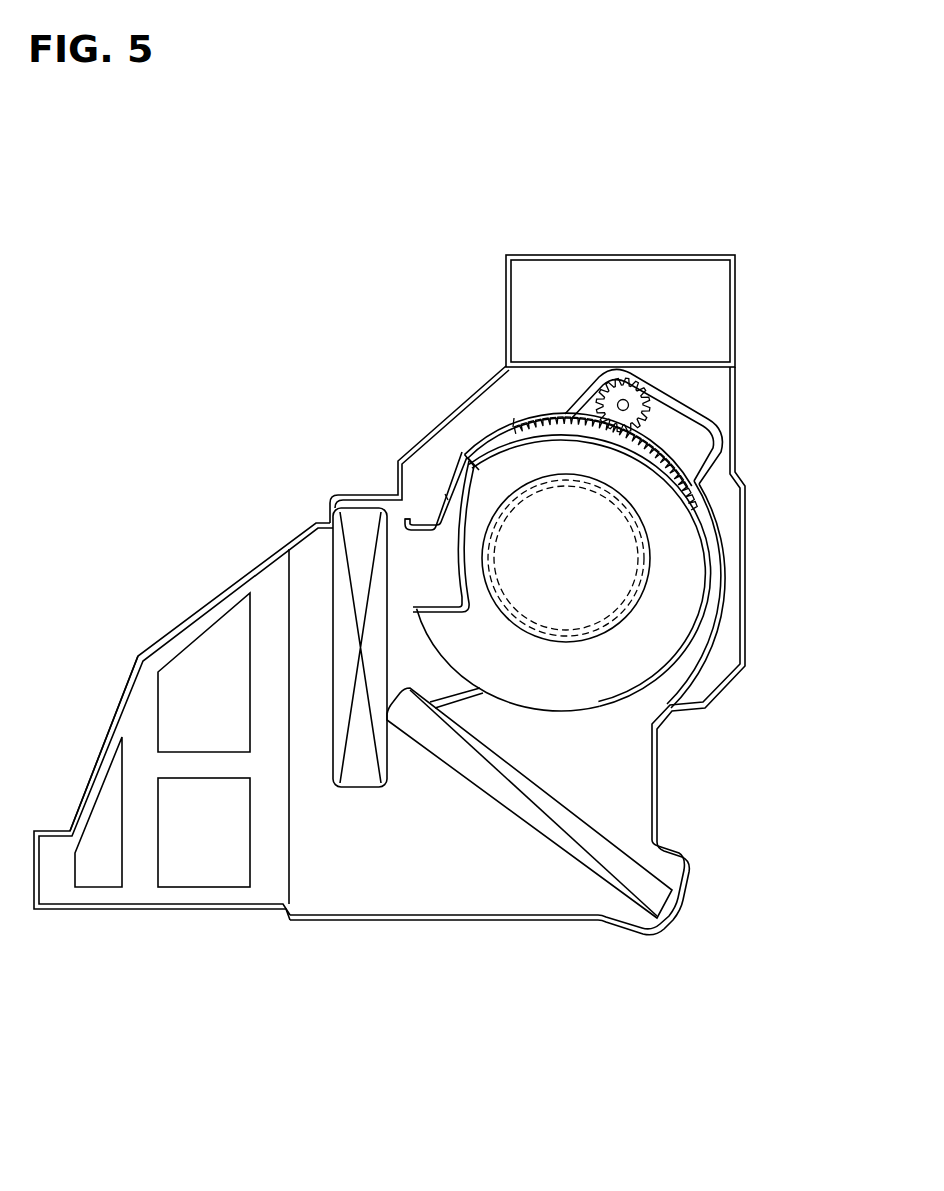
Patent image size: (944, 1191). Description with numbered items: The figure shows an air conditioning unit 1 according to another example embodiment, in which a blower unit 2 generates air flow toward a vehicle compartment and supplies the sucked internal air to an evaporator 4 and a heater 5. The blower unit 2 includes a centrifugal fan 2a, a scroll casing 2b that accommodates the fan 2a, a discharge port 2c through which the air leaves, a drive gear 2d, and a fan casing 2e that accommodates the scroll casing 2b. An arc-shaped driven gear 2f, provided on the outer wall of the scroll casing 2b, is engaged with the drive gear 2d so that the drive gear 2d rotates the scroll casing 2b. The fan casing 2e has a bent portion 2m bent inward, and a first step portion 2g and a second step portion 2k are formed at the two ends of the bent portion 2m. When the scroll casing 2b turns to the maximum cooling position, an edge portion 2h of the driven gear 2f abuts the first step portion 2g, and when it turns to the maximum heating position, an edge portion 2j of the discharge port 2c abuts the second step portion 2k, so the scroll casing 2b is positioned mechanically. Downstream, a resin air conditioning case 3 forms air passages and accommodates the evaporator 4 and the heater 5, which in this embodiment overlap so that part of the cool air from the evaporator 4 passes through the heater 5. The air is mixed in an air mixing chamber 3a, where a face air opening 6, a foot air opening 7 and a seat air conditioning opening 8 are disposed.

The air conditioning unit 1 is at (740, 278).
The blower unit 2 is at (725, 501).
The fan 2a is at (637, 583).
The scroll casing 2b is at (680, 647).
The discharge port 2c is at (517, 683).
The drive gear 2d is at (629, 403).
The fan casing 2e is at (483, 442).
The driven gear 2f is at (721, 504).
The first step portion 2g is at (450, 466).
The edge portion 2h is at (513, 433).
The edge portion 2j is at (425, 630).
The second step portion 2k is at (409, 524).
The bent portion 2m is at (445, 494).
The air conditioning case 3 is at (294, 531).
The air mixing chamber 3a is at (140, 728).
The evaporator 4 is at (652, 868).
The heater 5 is at (328, 512).
The face air opening 6 is at (211, 862).
The foot air opening 7 is at (200, 665).
The seat air conditioning opening 8 is at (100, 862).